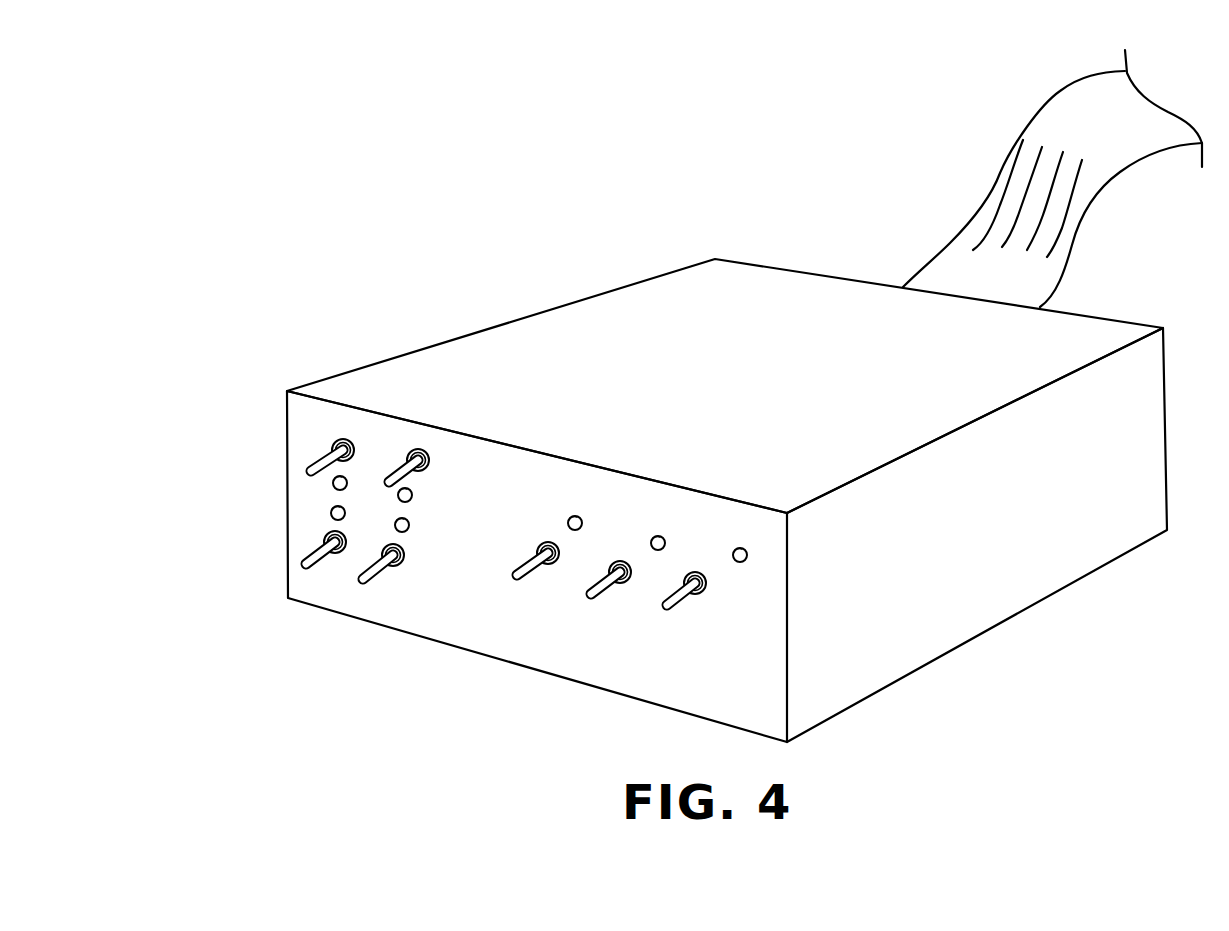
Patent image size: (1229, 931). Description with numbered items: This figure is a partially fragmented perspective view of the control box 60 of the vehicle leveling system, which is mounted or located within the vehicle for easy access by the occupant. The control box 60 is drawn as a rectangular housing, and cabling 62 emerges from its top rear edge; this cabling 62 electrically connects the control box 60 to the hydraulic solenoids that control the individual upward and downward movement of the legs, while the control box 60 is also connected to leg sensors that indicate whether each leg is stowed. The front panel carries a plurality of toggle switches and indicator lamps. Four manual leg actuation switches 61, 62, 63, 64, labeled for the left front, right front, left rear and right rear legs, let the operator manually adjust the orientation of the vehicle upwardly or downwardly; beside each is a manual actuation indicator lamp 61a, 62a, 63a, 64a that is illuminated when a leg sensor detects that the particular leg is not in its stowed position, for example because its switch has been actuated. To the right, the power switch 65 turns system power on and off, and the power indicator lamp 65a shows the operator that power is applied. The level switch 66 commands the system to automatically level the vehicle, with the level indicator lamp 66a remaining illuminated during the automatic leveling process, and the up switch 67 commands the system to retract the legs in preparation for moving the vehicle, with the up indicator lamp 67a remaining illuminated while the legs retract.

The control box 60 is at (436, 283).
The manual leg actuation switch 61 is at (306, 466).
The manual actuation indicator lamp 61a is at (332, 488).
The cabling / manual leg actuation switch 62 is at (1053, 120).
The manual actuation indicator lamp 62a is at (412, 496).
The manual leg actuation switch 63 is at (300, 567).
The manual actuation indicator lamp 63a is at (330, 517).
The manual leg actuation switch 64 is at (365, 579).
The manual actuation indicator lamp 64a is at (410, 527).
The power switch 65 is at (673, 611).
The power indicator lamp 65a is at (748, 552).
The level switch 66 is at (580, 598).
The level indicator lamp 66a is at (666, 537).
The up switch 67 is at (513, 581).
The up indicator lamp 67a is at (578, 513).